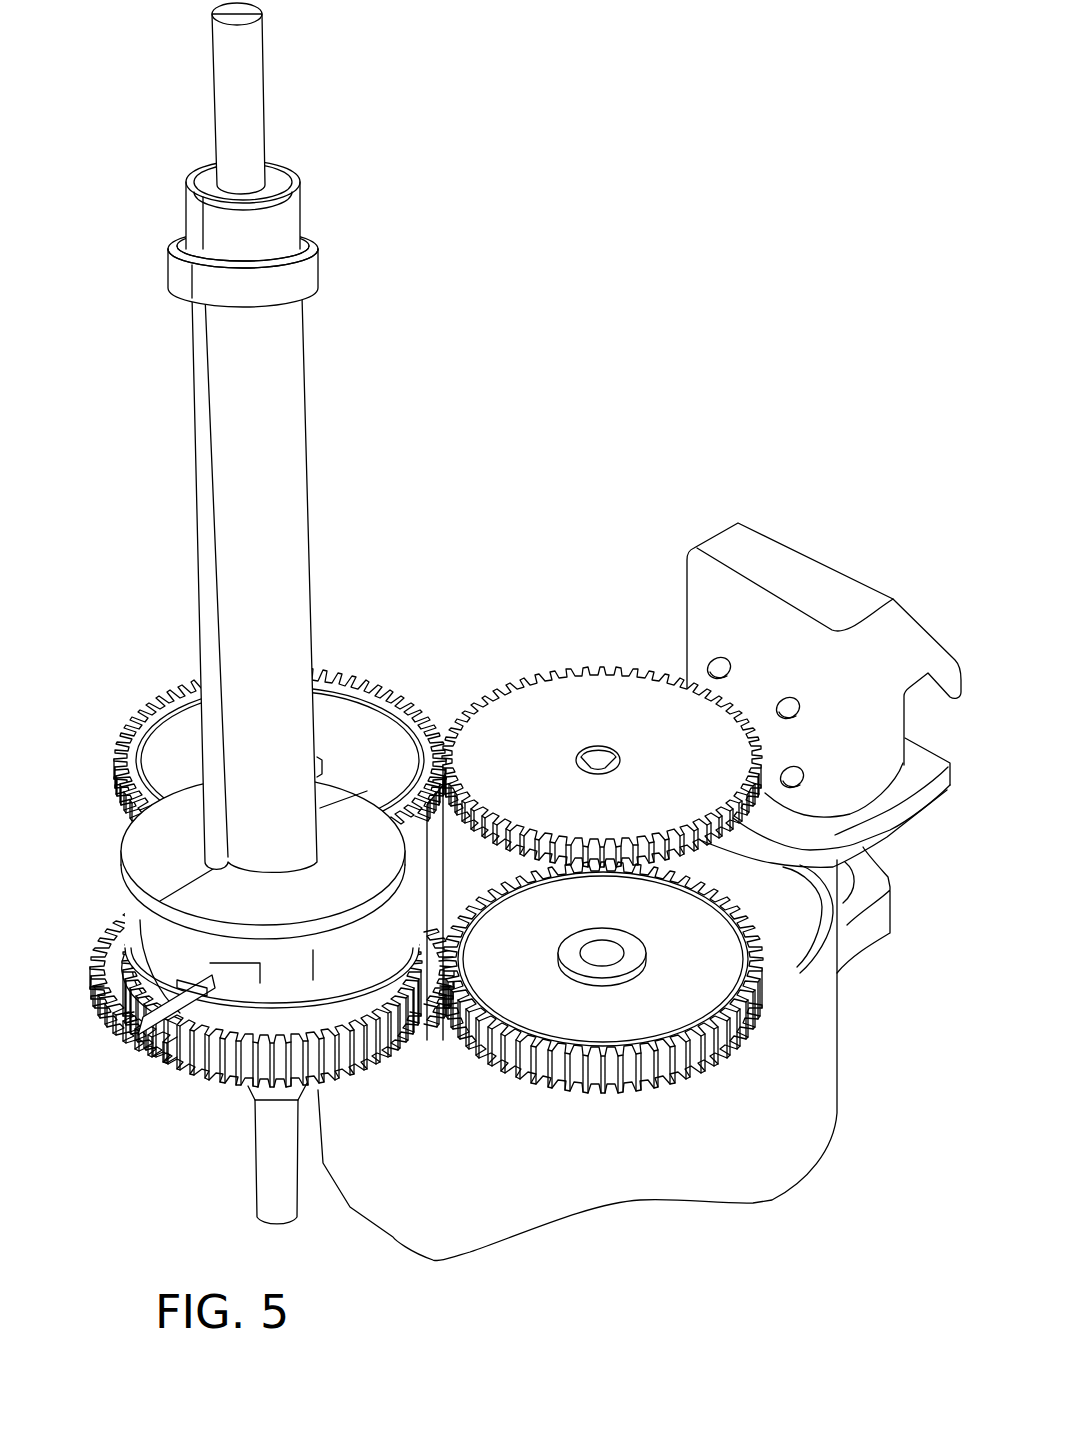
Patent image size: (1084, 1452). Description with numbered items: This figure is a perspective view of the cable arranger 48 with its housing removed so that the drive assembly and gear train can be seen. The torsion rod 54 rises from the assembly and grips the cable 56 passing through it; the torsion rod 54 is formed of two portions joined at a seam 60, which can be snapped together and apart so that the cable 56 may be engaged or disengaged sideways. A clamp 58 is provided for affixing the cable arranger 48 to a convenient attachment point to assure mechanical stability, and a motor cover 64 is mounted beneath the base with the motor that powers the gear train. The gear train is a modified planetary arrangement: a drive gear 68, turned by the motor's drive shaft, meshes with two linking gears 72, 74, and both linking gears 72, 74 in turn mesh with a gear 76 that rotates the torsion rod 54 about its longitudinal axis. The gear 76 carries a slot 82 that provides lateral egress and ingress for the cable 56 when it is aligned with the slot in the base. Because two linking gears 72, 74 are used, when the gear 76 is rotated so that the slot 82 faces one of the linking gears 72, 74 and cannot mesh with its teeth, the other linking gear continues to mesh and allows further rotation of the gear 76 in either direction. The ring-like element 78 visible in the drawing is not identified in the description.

The cable arranger 48 is at (690, 178).
The torsion rod 54 is at (256, 584).
The cable 56 is at (253, 65).
The clamp 58 is at (848, 570).
The seam 60 is at (203, 417).
The motor cover 64 is at (778, 1133).
The drive gear 68 is at (590, 692).
The linking gear 72 is at (135, 712).
The linking gear 74 is at (657, 1007).
The gear 76 is at (180, 1067).
The ring gear 78 is at (150, 957).
The slot 82 is at (150, 1037).